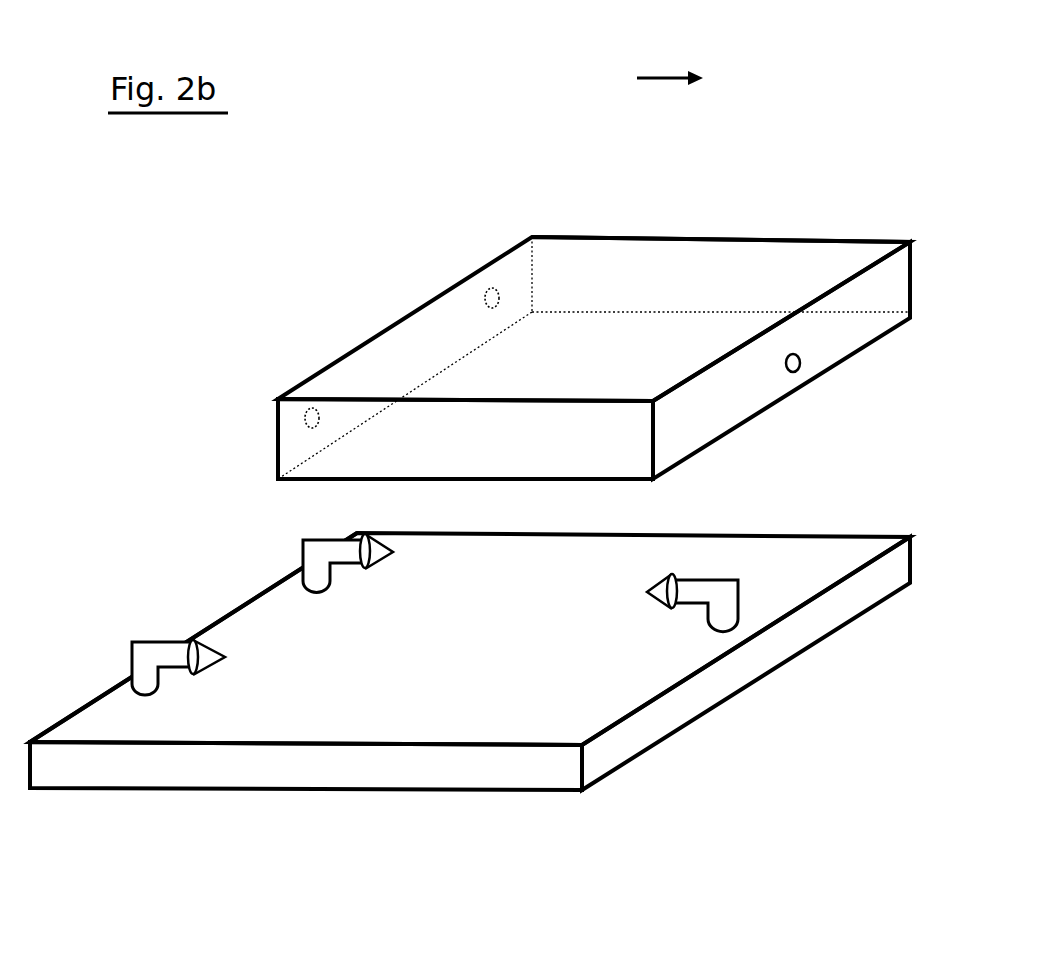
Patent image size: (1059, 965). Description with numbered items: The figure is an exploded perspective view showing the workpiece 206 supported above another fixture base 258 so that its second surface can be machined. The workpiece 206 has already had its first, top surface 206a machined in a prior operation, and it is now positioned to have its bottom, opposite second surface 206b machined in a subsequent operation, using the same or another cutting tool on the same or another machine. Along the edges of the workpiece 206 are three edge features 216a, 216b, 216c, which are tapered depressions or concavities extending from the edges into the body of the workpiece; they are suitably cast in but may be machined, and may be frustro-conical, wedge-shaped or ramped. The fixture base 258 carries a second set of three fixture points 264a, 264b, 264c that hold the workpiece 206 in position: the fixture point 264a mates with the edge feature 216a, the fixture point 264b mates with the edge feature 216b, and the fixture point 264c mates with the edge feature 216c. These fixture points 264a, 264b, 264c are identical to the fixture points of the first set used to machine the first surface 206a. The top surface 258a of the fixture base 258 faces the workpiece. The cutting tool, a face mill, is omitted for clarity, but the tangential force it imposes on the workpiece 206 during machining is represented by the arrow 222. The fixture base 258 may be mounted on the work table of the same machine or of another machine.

The workpiece 206 is at (277, 458).
The first top surface 206a is at (313, 478).
The second opposite surface 206b is at (515, 264).
The edge feature 216a is at (302, 410).
The edge feature 216b is at (482, 290).
The edge feature 216c is at (804, 373).
The arrow 222 is at (662, 77).
The fixture base 258 is at (323, 771).
The top surface of base plate 258a is at (247, 627).
The fixture point 264a is at (148, 679).
The fixture point 264b is at (318, 574).
The fixture point 264c is at (733, 600).